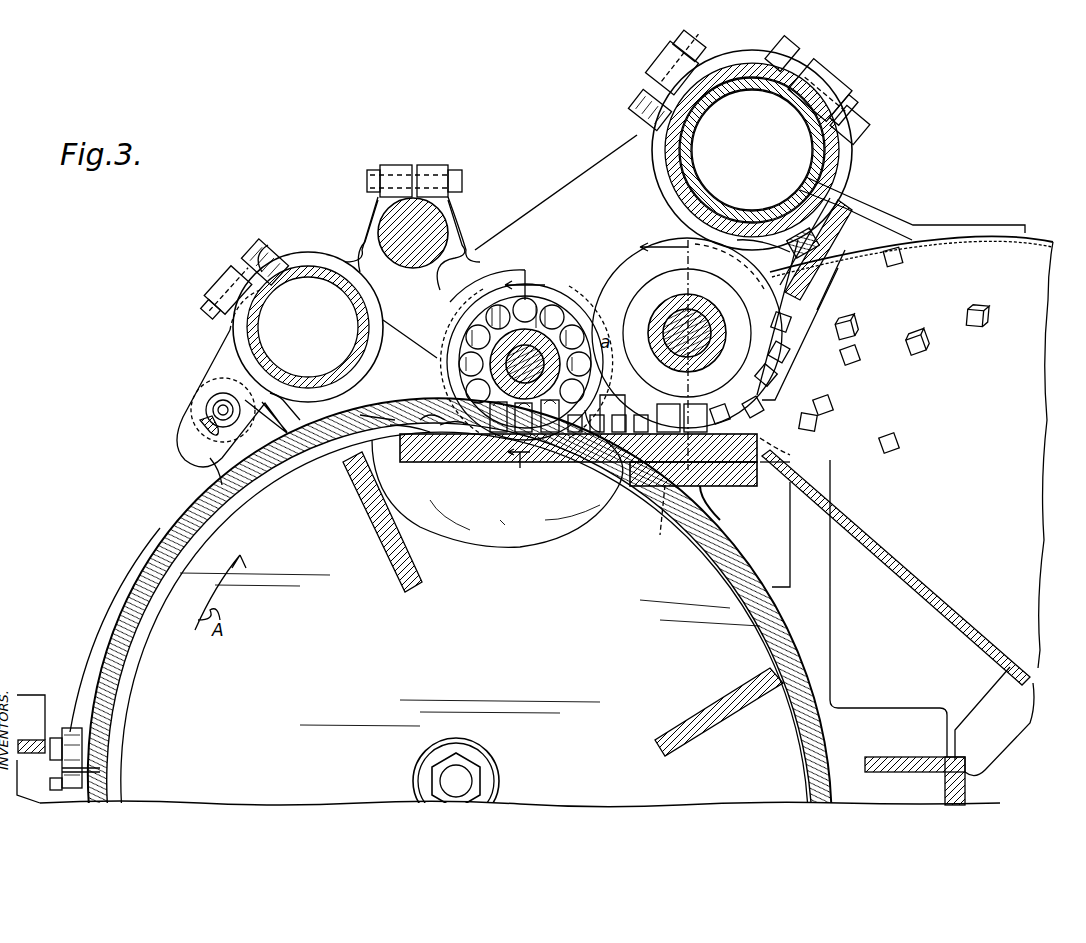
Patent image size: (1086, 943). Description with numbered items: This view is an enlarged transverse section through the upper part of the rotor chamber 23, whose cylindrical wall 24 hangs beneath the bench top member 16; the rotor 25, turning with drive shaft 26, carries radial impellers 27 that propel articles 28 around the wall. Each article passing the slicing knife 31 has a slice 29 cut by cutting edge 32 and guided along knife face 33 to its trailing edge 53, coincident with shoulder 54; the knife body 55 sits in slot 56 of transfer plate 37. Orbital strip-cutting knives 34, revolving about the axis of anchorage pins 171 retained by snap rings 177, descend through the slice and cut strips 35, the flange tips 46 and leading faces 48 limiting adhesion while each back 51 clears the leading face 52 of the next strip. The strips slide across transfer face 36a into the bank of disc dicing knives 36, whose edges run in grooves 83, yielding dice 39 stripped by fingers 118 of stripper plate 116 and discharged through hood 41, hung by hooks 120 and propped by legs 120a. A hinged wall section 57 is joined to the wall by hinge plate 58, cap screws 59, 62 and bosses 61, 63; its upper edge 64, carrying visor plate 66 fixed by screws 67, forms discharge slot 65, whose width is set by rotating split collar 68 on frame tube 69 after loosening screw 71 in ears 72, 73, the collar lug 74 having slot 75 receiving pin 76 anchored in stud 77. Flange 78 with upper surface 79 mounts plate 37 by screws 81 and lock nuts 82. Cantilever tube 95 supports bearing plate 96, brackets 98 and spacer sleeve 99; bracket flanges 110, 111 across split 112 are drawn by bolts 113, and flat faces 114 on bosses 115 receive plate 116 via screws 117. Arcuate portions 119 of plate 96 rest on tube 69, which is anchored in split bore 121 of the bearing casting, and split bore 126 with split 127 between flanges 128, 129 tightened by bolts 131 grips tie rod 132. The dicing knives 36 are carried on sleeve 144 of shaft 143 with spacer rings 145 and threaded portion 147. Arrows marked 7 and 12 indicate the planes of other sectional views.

The main shaft 7 is at (527, 337).
The pusher bar 12 is at (578, 345).
The bench top member 16 is at (965, 796).
The rotor chamber 23 is at (822, 660).
The cylindrical wall 24 is at (822, 702).
The rotor 25 is at (546, 686).
The rotor drive shaft 26 is at (462, 778).
The impellers 27 is at (390, 558).
The sliceable articles 28 is at (468, 542).
The slice 29 is at (490, 436).
The slicing knife 31 is at (500, 436).
The cutting edge 32 is at (478, 436).
The knife face 33 is at (485, 438).
The strip-cutting knives 34 is at (500, 325).
The strips 35 is at (618, 430).
The disc-shaped dicing knives 36 is at (628, 275).
The transfer face 36a is at (635, 462).
The transfer plate 37 is at (618, 500).
The dice-shaped pieces 39 is at (822, 395).
The hood 41 is at (1035, 233).
The tip portion 46 is at (498, 305).
The leading faces 48 is at (466, 340).
The trailing face 51 is at (459, 364).
The leading face 52 is at (620, 430).
The trailing edge 53 is at (508, 436).
The shoulder 54 is at (512, 440).
The plate-like body portion 55 is at (565, 436).
The slot 56 is at (580, 440).
The wall section 57 is at (163, 533).
The flexible hinge plate 58 is at (108, 768).
The cap screw 59 is at (55, 740).
The boss 61 is at (72, 730).
The cap screw 62 is at (50, 784).
The boss portion 63 is at (108, 786).
The upper edge 64 is at (395, 432).
The slot-like opening 65 is at (455, 432).
The visor plate 66 is at (430, 430).
The screws 67 is at (425, 400).
The split collar 68 is at (296, 254).
The fixed frame tube 69 is at (318, 267).
The screw 71 is at (212, 313).
The apertured ear 72 is at (222, 282).
The apertured ear 73 is at (255, 250).
The lug 74 is at (200, 378).
The slot 75 is at (198, 424).
The pin 76 is at (208, 410).
The stud 77 is at (225, 462).
The exterior flange 78 is at (718, 488).
The horizontal upper surface 79 is at (745, 490).
The screws 81 is at (661, 520).
The lock nut 82 is at (700, 410).
The grooves 83 is at (782, 452).
The tubular cantilever frame member 95 is at (736, 90).
The pivotable bearing plate 96 is at (600, 170).
The bracket 98 is at (850, 155).
The spacer sleeve 99 is at (838, 170).
The apertured flange 110 is at (636, 108).
The apertured flange 111 is at (655, 62).
The axial split 112 is at (660, 98).
The bolts 113 is at (676, 42).
The flat faces 114 is at (800, 238).
The bosses 115 is at (788, 290).
The dice stripper plate 116 is at (870, 212).
The screws 117 is at (792, 214).
The stripping fingers 118 is at (775, 340).
The arcuate end portions 119 is at (308, 252).
The hooks 120 is at (890, 214).
The short legs 120a is at (992, 750).
The split bore 121 is at (366, 300).
The split bores 126 is at (448, 205).
The split 127 is at (416, 170).
The flange 128 is at (392, 165).
The flange 129 is at (436, 165).
The bolts 131 is at (367, 176).
The tie rod 132 is at (442, 225).
The dicing knife shaft 143 is at (700, 305).
The mounting sleeve 144 is at (528, 305).
The spaced rings 145 is at (738, 312).
The threaded portion 147 is at (676, 305).
The knife anchorage element 171 is at (572, 340).
The snap rings 177 is at (590, 420).